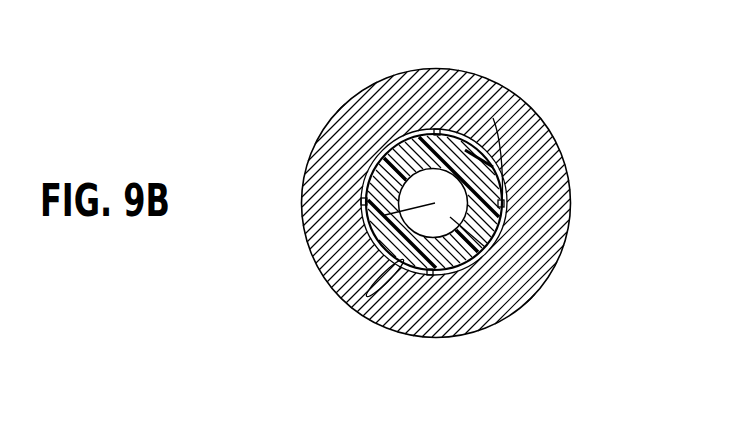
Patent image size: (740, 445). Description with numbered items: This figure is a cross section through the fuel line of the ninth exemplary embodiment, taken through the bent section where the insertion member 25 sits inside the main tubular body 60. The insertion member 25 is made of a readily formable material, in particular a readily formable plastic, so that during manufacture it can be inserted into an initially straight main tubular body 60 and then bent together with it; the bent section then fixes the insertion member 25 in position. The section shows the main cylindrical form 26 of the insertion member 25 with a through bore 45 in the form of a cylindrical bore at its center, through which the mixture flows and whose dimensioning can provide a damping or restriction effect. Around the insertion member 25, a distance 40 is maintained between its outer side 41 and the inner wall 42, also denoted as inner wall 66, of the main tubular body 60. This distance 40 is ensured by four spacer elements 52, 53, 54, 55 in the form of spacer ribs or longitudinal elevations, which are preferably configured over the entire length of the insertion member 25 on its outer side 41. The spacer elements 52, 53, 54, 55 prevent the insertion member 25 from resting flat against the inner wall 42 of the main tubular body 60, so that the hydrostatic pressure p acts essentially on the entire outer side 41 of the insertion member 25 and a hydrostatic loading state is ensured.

The insertion member 25 is at (493, 118).
The main cylindrical form 26 is at (492, 157).
The distance 40 is at (485, 247).
The outer side 41 is at (368, 178).
The inner wall 42 is at (425, 131).
The through bore 45 is at (320, 272).
The spacer element 52 is at (437, 129).
The spacer element 53 is at (363, 200).
The spacer element 54 is at (430, 275).
The spacer element 55 is at (503, 206).
The main tubular body 60 is at (533, 253).
The inner wall 66 is at (357, 313).
The hydrostatic pressure p is at (429, 181).